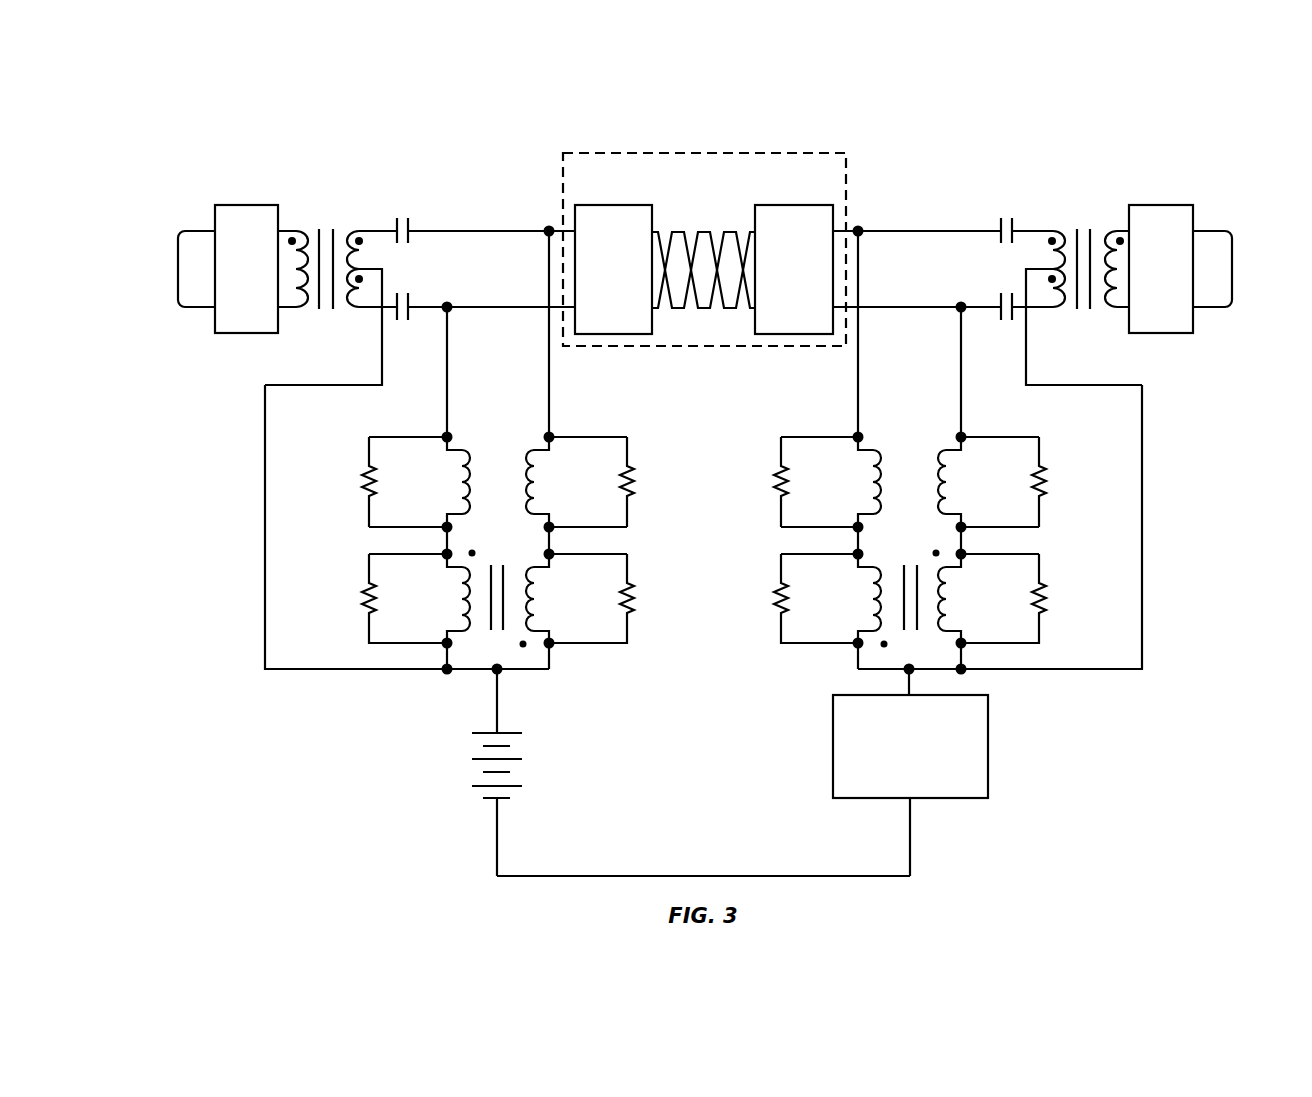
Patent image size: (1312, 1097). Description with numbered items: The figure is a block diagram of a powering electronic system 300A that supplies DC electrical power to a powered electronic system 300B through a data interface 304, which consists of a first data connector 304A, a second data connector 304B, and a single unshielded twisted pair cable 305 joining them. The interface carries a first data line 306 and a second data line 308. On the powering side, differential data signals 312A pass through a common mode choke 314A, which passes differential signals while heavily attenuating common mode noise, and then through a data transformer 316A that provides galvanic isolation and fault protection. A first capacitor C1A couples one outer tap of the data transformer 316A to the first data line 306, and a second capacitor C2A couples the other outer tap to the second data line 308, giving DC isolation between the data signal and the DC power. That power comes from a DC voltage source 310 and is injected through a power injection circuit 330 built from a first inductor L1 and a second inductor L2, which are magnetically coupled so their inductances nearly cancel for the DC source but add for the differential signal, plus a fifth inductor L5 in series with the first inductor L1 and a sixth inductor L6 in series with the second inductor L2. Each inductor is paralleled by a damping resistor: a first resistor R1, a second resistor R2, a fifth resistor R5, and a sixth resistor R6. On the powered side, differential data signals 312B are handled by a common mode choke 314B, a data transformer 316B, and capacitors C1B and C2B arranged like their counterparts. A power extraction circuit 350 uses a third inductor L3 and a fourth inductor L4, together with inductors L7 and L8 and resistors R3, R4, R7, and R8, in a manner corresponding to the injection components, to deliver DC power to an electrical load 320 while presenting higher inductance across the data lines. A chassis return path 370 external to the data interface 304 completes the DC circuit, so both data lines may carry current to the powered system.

The powering electronic system 300A is at (305, 826).
The powered electronic system 300B is at (1092, 826).
The data interface 304 is at (757, 153).
The first data connector 304A is at (590, 304).
The second data connector 304B is at (771, 304).
The unshielded twisted pair (UTP) cable 305 is at (703, 216).
The first data line 306 is at (975, 231).
The second data line 308 is at (912, 308).
The DC voltage source 310 is at (458, 788).
The differential data signal 312A is at (178, 269).
The differential data signal 312B is at (1232, 269).
The common mode choke 314A is at (225, 291).
The common mode choke 314B is at (1139, 291).
The data transformer 316A is at (330, 325).
The data transformer 316B is at (1083, 325).
The electrical load 320 is at (891, 771).
The power injection circuit 330 is at (252, 540).
The power extraction circuit 350 is at (1157, 540).
The chassis return path 370 is at (880, 876).
The first capacitor C1A is at (402, 218).
The second capacitor C2A is at (402, 321).
The capacitor C1B is at (1005, 218).
The capacitor C2B is at (1000, 322).
The first inductor L1 is at (445, 619).
The second inductor L2 is at (553, 619).
The third inductor L3 is at (965, 619).
The fourth inductor L4 is at (856, 619).
The fifth inductor L5 is at (445, 502).
The sixth inductor L6 is at (553, 502).
The inductor L7 is at (965, 502).
The inductor L8 is at (856, 502).
The first resistor R1 is at (353, 607).
The second resistor R2 is at (640, 607).
The resistor R3 is at (1053, 607).
The resistor R4 is at (778, 607).
The fifth resistor R5 is at (353, 490).
The sixth resistor R6 is at (640, 490).
The resistor R7 is at (1053, 490).
The resistor R8 is at (778, 490).